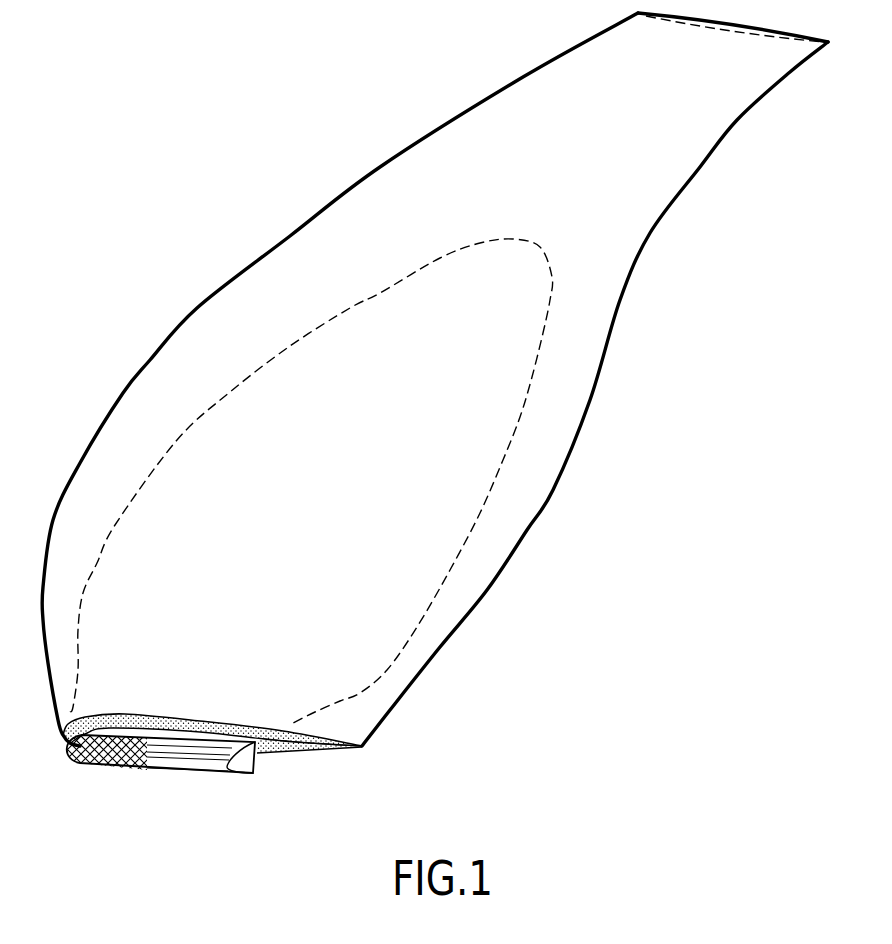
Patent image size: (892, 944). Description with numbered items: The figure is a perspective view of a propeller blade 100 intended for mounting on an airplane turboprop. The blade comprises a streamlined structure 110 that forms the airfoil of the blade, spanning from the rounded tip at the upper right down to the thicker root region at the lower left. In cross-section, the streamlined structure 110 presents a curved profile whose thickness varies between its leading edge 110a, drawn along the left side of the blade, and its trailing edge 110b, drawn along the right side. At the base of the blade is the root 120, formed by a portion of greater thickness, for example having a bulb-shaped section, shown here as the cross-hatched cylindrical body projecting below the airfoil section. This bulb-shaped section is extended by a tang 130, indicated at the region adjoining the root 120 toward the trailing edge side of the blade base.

The propeller blade 100 is at (427, 415).
The streamlined structure 110 is at (435, 383).
The leading edge 110a is at (120, 390).
The trailing edge 110b is at (620, 300).
The root 120 is at (256, 763).
The tang 130 is at (258, 746).